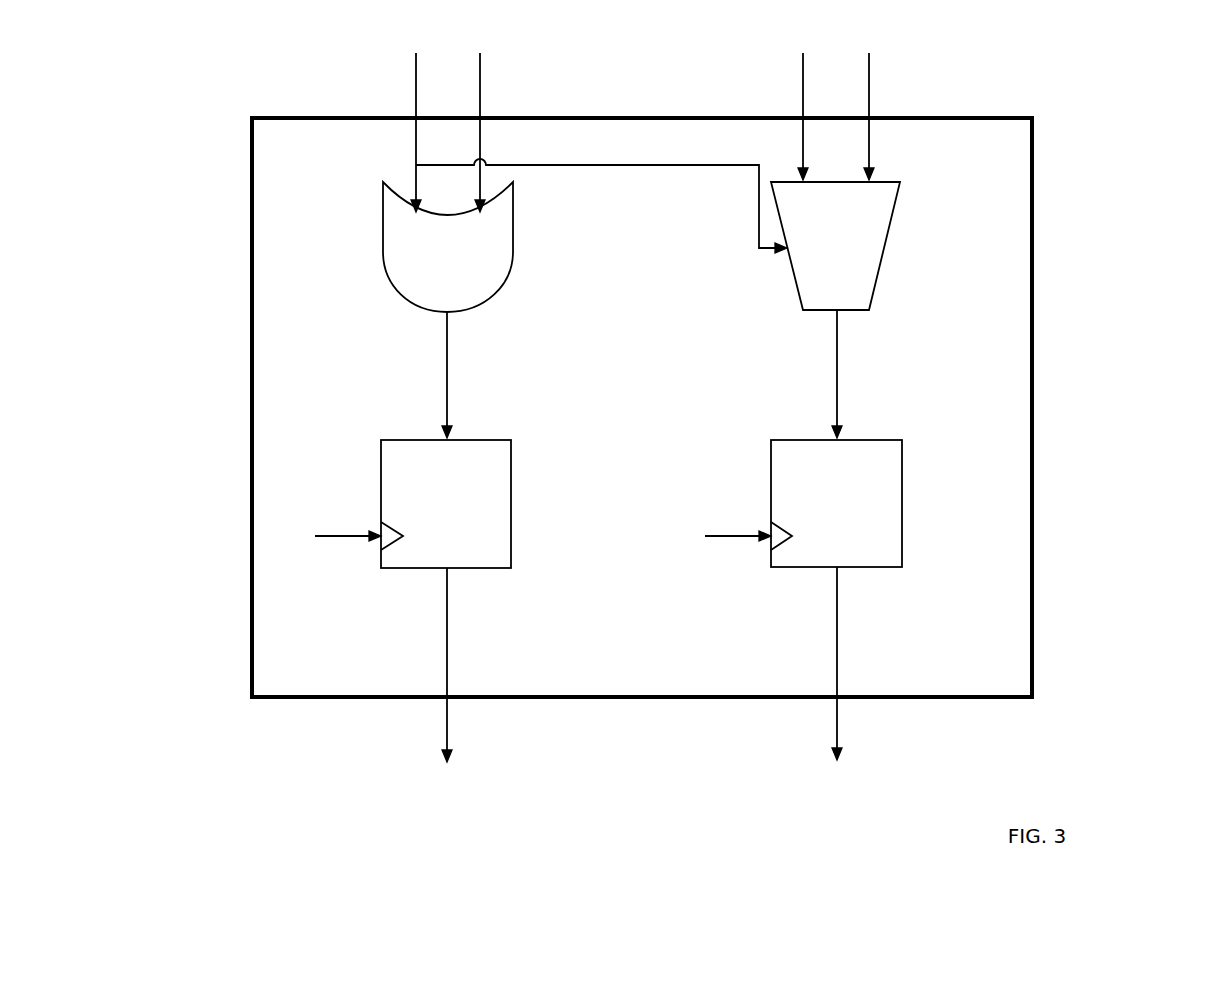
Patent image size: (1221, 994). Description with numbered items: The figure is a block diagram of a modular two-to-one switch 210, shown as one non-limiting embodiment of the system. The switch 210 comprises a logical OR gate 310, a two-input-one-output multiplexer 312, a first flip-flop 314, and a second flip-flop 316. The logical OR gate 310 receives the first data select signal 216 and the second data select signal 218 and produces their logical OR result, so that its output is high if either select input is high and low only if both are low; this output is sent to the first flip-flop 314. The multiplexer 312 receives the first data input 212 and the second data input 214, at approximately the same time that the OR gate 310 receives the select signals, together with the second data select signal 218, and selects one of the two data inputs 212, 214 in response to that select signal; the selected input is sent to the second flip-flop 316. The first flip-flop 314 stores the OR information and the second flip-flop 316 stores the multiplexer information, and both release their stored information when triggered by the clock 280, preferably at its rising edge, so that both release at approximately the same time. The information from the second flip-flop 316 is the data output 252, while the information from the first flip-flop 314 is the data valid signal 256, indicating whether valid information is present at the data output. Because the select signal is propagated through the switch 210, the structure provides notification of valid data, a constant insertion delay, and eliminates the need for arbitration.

The 2-to-1 switch 210 is at (250, 404).
The first data input 212 is at (869, 88).
The second data input 214 is at (803, 88).
The first data select signal 216 is at (480, 88).
The second data select signal 218 is at (416, 88).
The data output 252 is at (837, 713).
The data valid signal 256 is at (447, 713).
The clock 280 is at (347, 537).
The logical OR gate 310 is at (513, 250).
The 2×1 multiplexer 312 is at (885, 246).
The first flip-flop 314 is at (511, 501).
The second flip-flop 316 is at (902, 501).